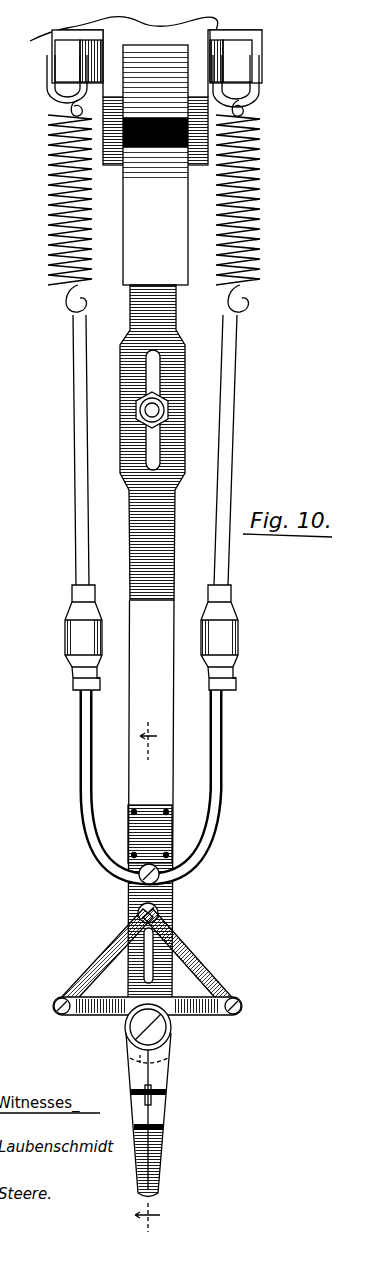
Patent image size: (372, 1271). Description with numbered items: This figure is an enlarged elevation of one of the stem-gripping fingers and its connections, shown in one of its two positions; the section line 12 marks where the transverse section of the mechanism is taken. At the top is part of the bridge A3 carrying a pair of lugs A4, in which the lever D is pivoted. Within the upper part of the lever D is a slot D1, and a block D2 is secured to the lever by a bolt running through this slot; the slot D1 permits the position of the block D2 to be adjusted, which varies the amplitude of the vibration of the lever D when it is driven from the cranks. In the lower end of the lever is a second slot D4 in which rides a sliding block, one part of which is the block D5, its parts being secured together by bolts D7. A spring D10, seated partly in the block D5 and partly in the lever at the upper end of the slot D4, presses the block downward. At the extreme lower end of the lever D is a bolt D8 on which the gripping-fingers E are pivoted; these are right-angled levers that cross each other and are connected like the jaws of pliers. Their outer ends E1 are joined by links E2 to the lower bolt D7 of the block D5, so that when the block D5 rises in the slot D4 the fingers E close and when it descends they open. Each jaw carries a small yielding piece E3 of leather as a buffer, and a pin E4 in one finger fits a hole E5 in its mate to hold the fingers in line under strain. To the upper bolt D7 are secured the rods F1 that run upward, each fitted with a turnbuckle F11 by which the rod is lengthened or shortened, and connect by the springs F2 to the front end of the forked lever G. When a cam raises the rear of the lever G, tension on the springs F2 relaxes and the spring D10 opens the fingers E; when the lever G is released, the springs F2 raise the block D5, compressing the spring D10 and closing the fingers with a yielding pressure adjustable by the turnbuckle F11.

The bridge A3 is at (52, 58).
The forked lever G is at (243, 73).
The lugs A4 is at (212, 118).
The springs F2 is at (52, 200).
The lever D is at (140, 525).
The slot D1 is at (152, 370).
The block D2 is at (163, 413).
The turnbuckle F1 is at (223, 747).
The turnbuckle F11 is at (238, 648).
The section line 12 is at (147, 977).
The spring D10 is at (167, 827).
The bolts D7 is at (173, 896).
The sliding block part D5 is at (138, 895).
The links E2 is at (192, 963).
The second slot D4 is at (150, 955).
The outer ends of fingers E1 is at (240, 1022).
The gripping-fingers E is at (165, 1095).
The bolt D8 is at (163, 1033).
The hole E5 is at (170, 1058).
The pin E4 is at (140, 1058).
The yielding buffer piece E3 is at (150, 1105).